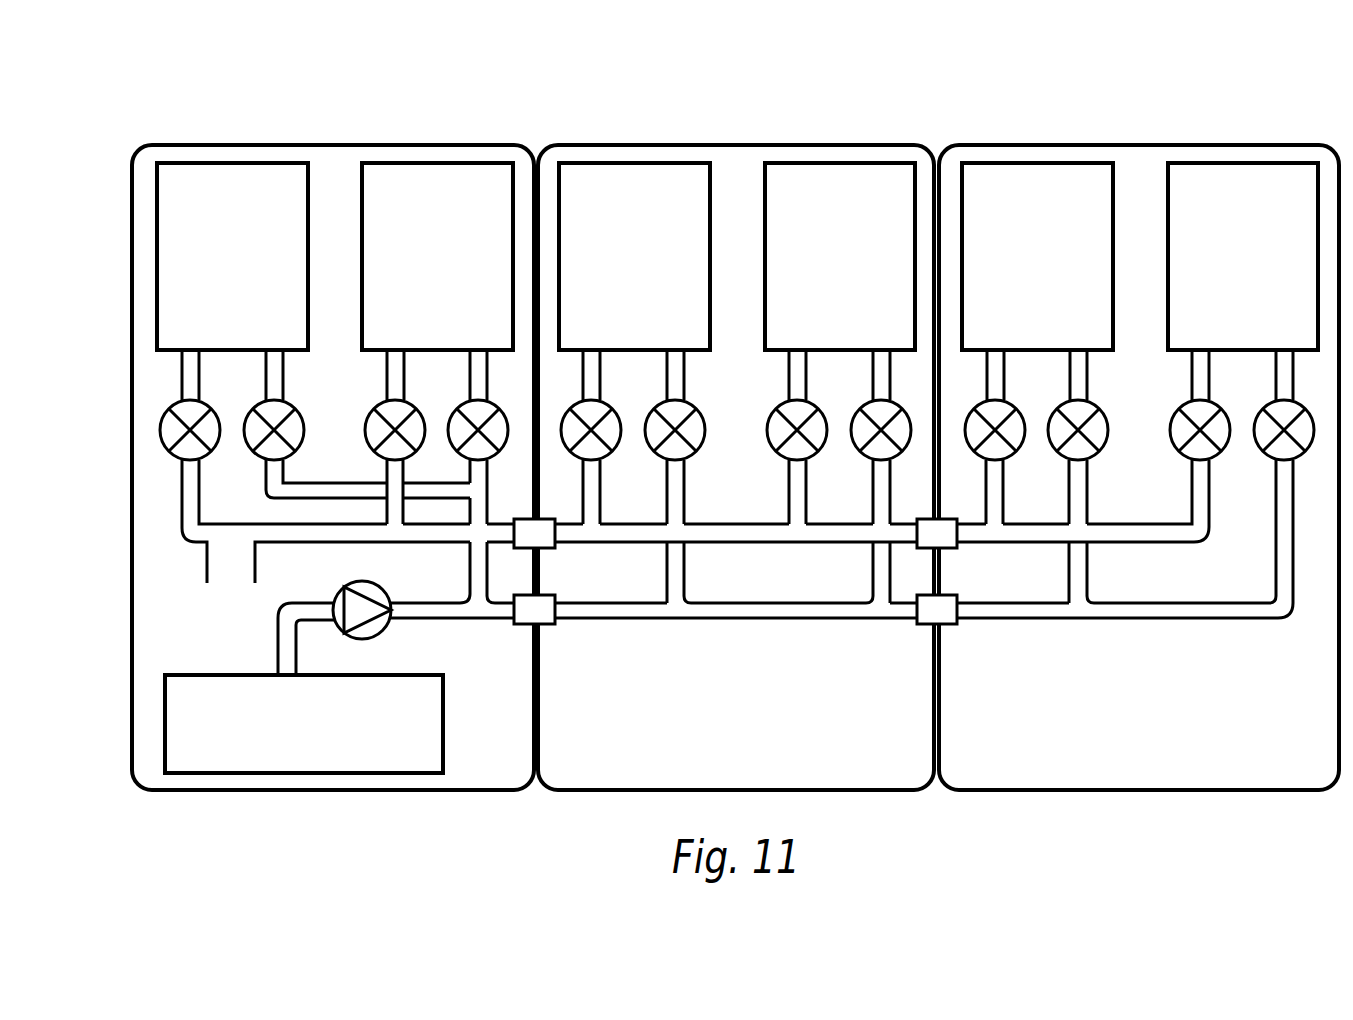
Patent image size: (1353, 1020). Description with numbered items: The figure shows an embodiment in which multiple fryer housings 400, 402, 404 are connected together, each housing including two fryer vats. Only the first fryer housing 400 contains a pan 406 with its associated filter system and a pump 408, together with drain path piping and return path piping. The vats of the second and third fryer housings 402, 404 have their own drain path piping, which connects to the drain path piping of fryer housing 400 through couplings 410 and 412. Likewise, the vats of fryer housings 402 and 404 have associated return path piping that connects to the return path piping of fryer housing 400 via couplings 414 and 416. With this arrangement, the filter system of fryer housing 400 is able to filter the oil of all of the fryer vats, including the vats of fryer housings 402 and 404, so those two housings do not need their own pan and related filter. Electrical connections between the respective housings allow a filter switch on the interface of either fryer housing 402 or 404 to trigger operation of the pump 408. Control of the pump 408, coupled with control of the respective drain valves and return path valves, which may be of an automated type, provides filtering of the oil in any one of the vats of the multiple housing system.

The fryer housing 400 is at (201, 144).
The fryer housing 402 is at (662, 144).
The fryer housing 404 is at (1025, 144).
The pan 406 is at (164, 738).
The pump 408 is at (380, 633).
The coupling 410 is at (543, 548).
The coupling 412 is at (945, 548).
The coupling 414 is at (545, 624).
The coupling 416 is at (947, 624).